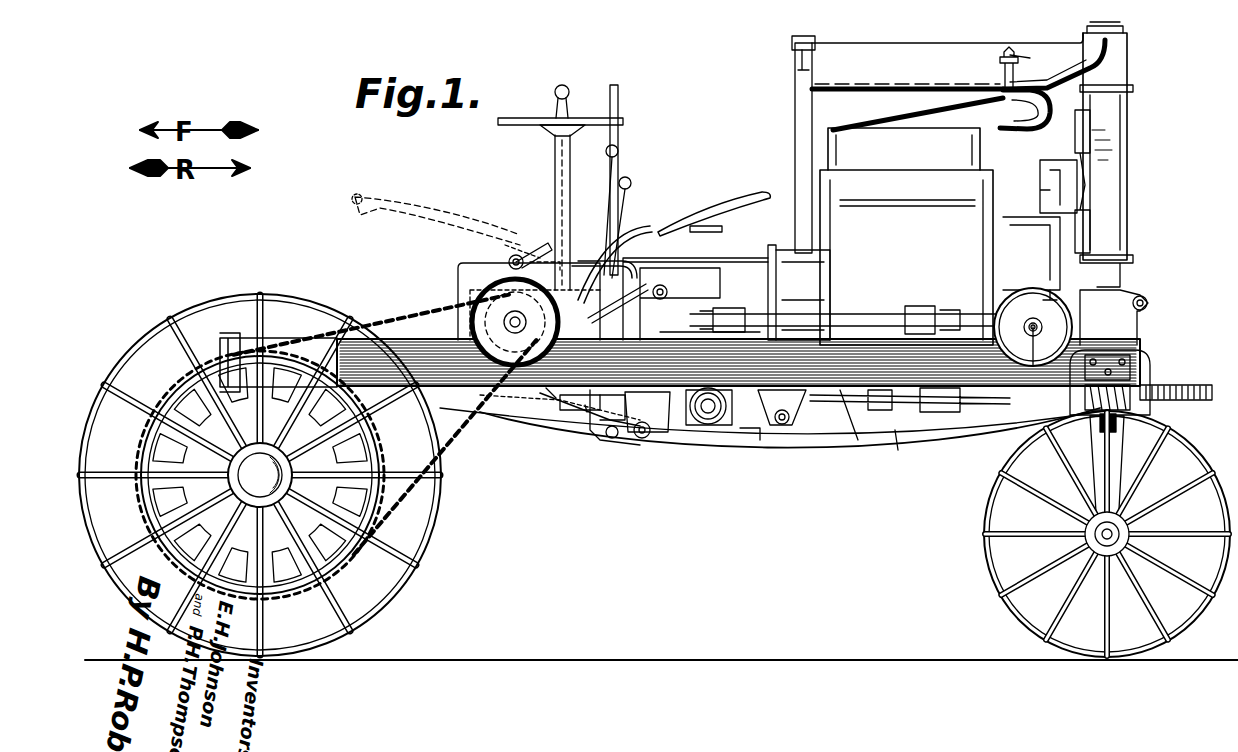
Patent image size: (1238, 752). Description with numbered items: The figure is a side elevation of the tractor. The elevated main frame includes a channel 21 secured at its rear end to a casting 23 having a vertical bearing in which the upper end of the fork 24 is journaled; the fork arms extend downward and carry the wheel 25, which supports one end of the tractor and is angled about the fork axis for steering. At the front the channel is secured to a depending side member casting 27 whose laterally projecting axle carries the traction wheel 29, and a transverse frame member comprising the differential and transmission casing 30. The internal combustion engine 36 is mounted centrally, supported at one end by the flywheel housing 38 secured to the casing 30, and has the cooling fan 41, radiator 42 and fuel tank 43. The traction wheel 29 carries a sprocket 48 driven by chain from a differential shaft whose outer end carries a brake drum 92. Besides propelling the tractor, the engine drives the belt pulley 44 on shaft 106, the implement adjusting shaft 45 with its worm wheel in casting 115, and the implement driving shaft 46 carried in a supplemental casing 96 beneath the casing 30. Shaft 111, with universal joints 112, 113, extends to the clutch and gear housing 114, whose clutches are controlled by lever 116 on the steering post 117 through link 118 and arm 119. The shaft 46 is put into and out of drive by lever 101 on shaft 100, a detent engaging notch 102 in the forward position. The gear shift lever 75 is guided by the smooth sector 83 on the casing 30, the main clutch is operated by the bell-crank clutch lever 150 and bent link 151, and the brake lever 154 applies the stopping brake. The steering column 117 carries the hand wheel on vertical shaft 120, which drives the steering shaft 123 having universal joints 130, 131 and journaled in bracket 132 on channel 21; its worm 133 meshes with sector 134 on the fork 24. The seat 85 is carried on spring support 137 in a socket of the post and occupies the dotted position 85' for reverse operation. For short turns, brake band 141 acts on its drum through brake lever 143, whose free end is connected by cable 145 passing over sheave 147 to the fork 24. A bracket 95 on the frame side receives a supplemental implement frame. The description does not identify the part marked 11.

The shaft end 11 is at (1001, 318).
The channel 21 is at (455, 402).
The casting 23 is at (1130, 318).
The fork 24 is at (1098, 448).
The wheel 25 is at (990, 500).
The casting 27 is at (284, 312).
The traction wheel 29 is at (260, 463).
The casing 30 is at (490, 345).
The internal combustion engine 36 is at (797, 132).
The flywheel housing 38 is at (822, 255).
The cooling fan 41 is at (1070, 140).
The radiator 42 is at (1128, 152).
The fuel tank 43 is at (795, 40).
The belt pulley 44 is at (995, 300).
The implement lifting or adjusting shaft 45 is at (790, 440).
The implement driving shaft 46 is at (572, 415).
The sprocket 48 is at (412, 330).
The lever 75 is at (618, 150).
The sector 83 is at (630, 260).
The seat 85 is at (714, 203).
The seat position 85' is at (421, 220).
The brake drum 92 is at (462, 280).
The bracket 95 is at (790, 418).
The supplemental casing 96 is at (622, 440).
The shaft 100 is at (650, 440).
The actuating lever 101 is at (716, 428).
The notch 102 is at (600, 445).
The shaft 106 is at (1010, 440).
The shaft 111 is at (855, 305).
The universal joint 112 is at (915, 304).
The universal joint 113 is at (810, 285).
The clutch and gear housing 114 is at (772, 258).
The casting 115 is at (760, 442).
The lever 116 is at (556, 168).
The steering post 117 is at (556, 146).
The link 118 is at (627, 311).
The arm 119 is at (712, 254).
The vertical shaft 120 is at (620, 102).
The steering shaft 123 is at (865, 429).
The universal joint 130 is at (595, 430).
The universal joint 131 is at (895, 412).
The bracket 132 is at (1142, 365).
The worm 133 is at (1148, 380).
The sector 134 is at (1152, 395).
The spring or support 137 is at (640, 230).
The brake band 141 is at (518, 252).
The brake lever 143 is at (504, 258).
The cable 145 is at (898, 452).
The sheave 147 is at (1155, 415).
The clutch lever 150 is at (630, 180).
The bent link 151 is at (728, 306).
The brake lever 154 is at (572, 90).